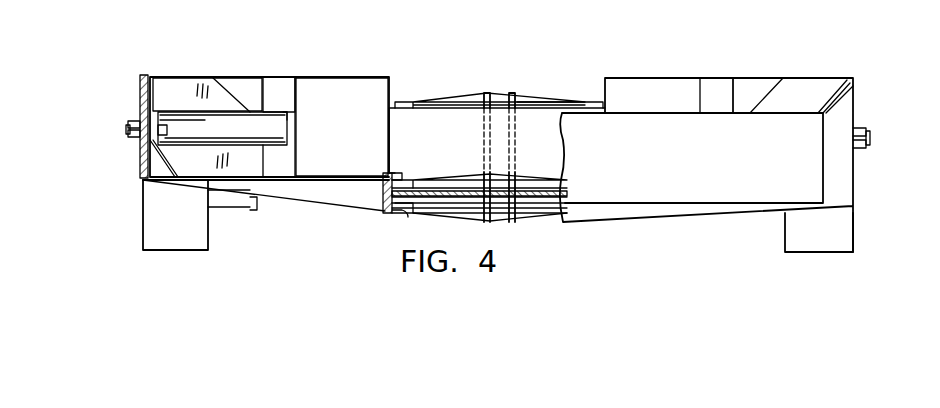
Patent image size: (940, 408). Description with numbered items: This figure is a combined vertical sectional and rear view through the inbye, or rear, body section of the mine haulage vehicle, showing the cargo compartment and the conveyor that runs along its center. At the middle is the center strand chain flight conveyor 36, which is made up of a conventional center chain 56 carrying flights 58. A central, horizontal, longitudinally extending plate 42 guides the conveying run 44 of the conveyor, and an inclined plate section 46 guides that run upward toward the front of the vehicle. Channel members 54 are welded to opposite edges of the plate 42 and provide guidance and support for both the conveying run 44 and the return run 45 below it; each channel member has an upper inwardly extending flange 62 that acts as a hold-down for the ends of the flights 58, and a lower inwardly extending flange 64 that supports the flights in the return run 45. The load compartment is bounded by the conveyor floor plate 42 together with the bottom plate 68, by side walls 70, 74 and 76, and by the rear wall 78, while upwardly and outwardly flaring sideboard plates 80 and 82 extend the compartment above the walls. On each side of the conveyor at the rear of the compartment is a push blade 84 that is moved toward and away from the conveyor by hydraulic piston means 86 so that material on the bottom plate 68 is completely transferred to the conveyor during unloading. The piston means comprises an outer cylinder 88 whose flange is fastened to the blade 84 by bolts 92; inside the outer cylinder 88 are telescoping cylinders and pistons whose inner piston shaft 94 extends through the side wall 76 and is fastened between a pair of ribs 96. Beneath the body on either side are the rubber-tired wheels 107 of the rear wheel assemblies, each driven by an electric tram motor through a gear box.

The center strand chain flight conveyor 36 is at (515, 85).
The plate 42 is at (565, 194).
The conveying run 44 is at (462, 98).
The return run 45 is at (480, 225).
The inclined plate section 46 is at (460, 133).
The channel members 54 is at (383, 221).
The center chain 56 is at (487, 92).
The flights 58 is at (548, 100).
The upper inwardly extending flanges 62 is at (396, 172).
The lower inwardly extending flanges 64 is at (405, 213).
The conveyor floor plate 68 is at (318, 178).
The side wall 70 is at (291, 102).
The side wall 74 is at (193, 105).
The side wall 76 is at (143, 84).
The rear wall 78 is at (711, 167).
The sideboard plate 80 is at (253, 93).
The sideboard plate 82 is at (232, 95).
The push blade 84 is at (152, 97).
The hydraulic piston means 86 is at (292, 105).
The outer cylinder 88 is at (222, 128).
The bolts 92 is at (178, 129).
The inner piston shaft 94 is at (127, 129).
The ribs 96 is at (130, 121).
The wheel 107 is at (170, 227).